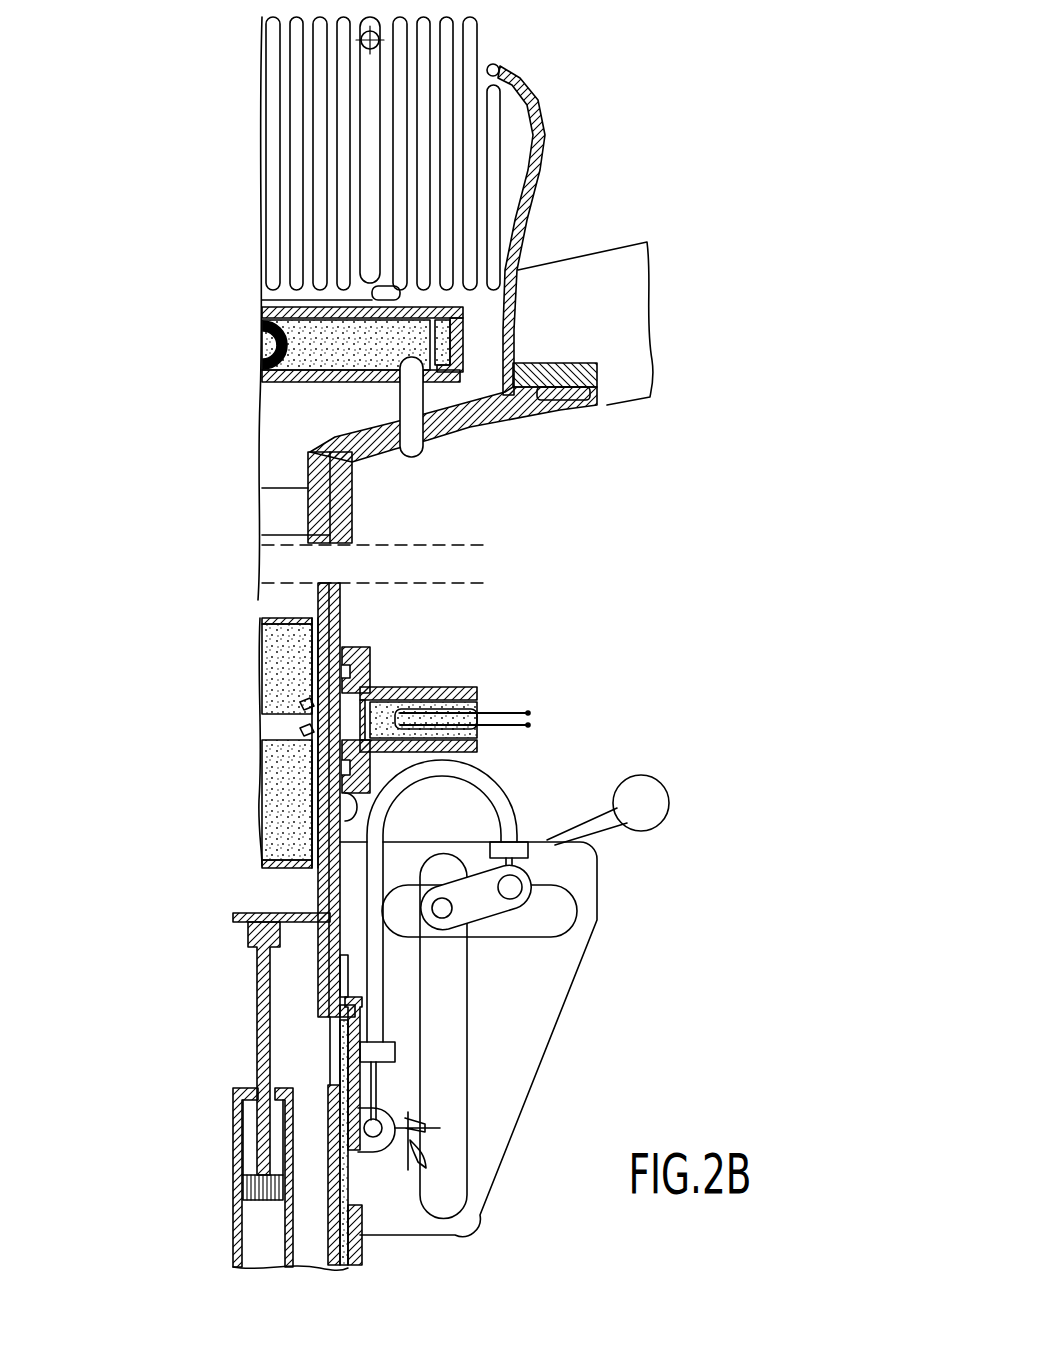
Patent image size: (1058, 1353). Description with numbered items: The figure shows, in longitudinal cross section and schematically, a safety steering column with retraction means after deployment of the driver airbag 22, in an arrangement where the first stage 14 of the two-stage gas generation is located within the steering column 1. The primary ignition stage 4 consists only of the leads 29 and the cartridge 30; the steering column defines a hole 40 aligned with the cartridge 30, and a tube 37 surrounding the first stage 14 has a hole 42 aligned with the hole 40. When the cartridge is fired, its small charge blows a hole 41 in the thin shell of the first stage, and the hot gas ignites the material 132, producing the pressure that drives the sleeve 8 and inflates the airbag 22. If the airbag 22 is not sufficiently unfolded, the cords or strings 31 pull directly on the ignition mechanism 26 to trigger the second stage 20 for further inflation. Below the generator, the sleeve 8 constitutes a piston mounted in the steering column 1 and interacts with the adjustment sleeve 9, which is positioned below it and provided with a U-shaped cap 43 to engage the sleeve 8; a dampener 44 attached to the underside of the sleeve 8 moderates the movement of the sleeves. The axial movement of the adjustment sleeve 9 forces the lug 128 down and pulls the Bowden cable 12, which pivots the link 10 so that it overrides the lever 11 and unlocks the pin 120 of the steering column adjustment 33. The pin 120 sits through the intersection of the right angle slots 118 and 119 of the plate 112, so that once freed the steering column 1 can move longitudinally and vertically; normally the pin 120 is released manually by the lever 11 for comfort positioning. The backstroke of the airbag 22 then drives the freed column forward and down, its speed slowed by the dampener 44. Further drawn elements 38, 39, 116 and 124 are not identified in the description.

The steering column 1 is at (352, 1251).
The primary ignition stage 4 is at (430, 688).
The sleeve 8 is at (322, 960).
The adjustment sleeve 9 is at (357, 1080).
The link 10 is at (473, 908).
The lever 11 is at (606, 832).
The Bowden cable 12 is at (428, 775).
The first stage 14 is at (289, 838).
The second stage 20 is at (345, 375).
The airbag 22 is at (437, 231).
The ignition mechanism 26 is at (262, 341).
The leads 29 is at (505, 724).
The cartridge 30 is at (375, 688).
The cords or strings 31 is at (372, 211).
The steering column adjustment 33 is at (562, 813).
The tube 37 is at (340, 592).
The housing edge 38 is at (478, 744).
The lower insulation 39 is at (312, 742).
The hole 40 is at (310, 705).
The hole in first stage shell 41 is at (318, 722).
The hole 42 is at (323, 716).
The U-shaped cap 43 is at (324, 1008).
The dampener 44 is at (256, 1160).
The plate 112 is at (545, 1037).
The flange 116 is at (343, 636).
The slot 118 is at (448, 1044).
The slot 119 is at (560, 920).
The pin 120 is at (442, 918).
The guide strip 124 is at (338, 976).
The lug 128 is at (366, 1146).
The material 132 is at (340, 627).